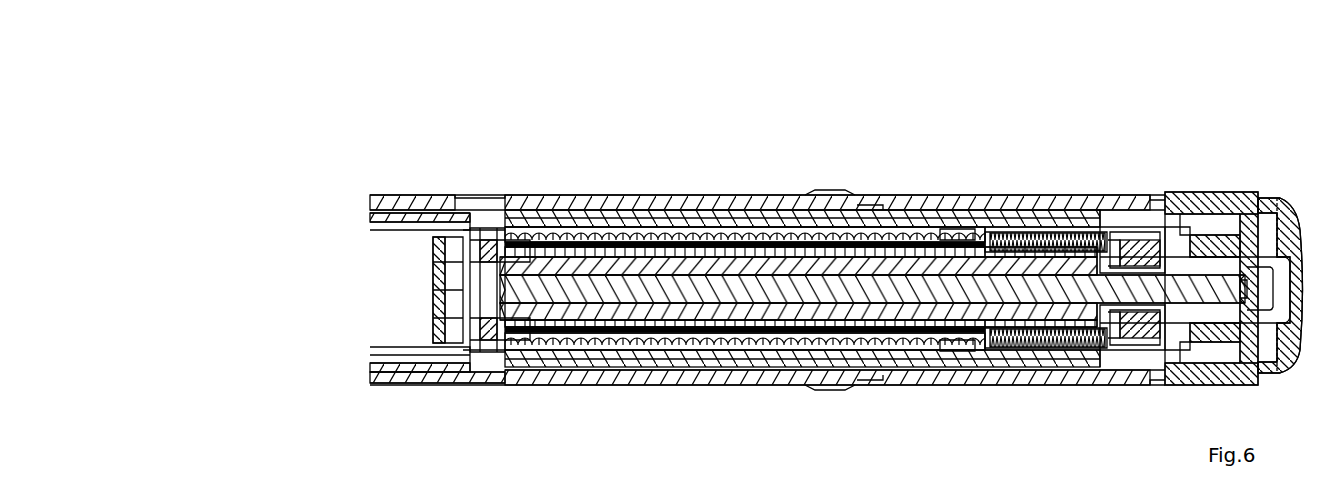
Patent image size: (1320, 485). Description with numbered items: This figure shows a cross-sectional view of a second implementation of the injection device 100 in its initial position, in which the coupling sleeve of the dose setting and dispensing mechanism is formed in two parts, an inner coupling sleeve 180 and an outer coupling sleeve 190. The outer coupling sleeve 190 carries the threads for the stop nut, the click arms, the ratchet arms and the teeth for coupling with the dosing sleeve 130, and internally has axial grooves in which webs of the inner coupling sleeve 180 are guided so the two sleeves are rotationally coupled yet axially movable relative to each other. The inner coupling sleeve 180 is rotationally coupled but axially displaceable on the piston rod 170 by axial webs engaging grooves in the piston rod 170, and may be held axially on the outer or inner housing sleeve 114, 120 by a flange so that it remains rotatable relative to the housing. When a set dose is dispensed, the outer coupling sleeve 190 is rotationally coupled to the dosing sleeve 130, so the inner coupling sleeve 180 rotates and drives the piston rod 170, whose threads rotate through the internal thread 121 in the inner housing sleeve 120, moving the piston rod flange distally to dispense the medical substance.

The injection device 100 is at (1172, 140).
The outer housing sleeve 114 is at (407, 207).
The inner housing sleeve 120 is at (675, 233).
The internal thread 121 is at (498, 272).
The dosing sleeve 130 is at (1013, 217).
The piston rod 170 is at (757, 283).
The inner coupling sleeve 180 is at (872, 265).
The outer coupling sleeve 190 is at (925, 250).